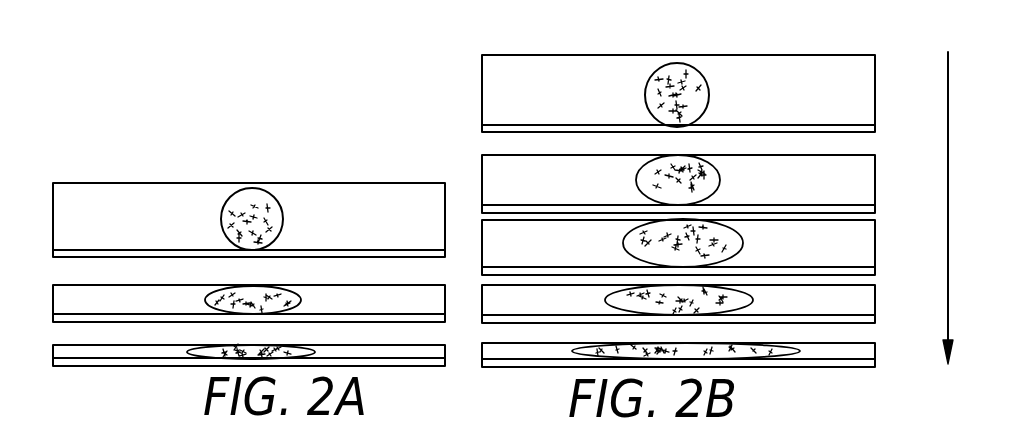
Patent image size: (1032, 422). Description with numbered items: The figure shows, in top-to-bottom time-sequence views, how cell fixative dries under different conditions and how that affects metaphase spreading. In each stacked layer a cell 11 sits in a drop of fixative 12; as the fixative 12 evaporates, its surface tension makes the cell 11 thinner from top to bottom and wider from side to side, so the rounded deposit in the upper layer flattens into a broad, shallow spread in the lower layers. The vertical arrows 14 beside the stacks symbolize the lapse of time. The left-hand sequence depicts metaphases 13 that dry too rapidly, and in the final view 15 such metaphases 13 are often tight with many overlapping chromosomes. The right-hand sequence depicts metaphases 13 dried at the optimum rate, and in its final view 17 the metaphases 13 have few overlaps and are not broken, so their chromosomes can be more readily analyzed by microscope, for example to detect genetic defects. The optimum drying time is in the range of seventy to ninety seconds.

In FIG. 2A, the cell 11 is at (247, 202).
In FIG. 2B, the cell 11 is at (700, 72).
In FIG. 2A, the fixative 12 is at (230, 225).
In FIG. 2A, the metaphases 13 is at (213, 351).
In FIG. 2B, the metaphases 13 is at (768, 349).
In FIG. 2B, the arrows 14 is at (950, 143).
In FIG. 2A, the view 15 is at (445, 352).
In FIG. 2B, the view 17 is at (876, 350).